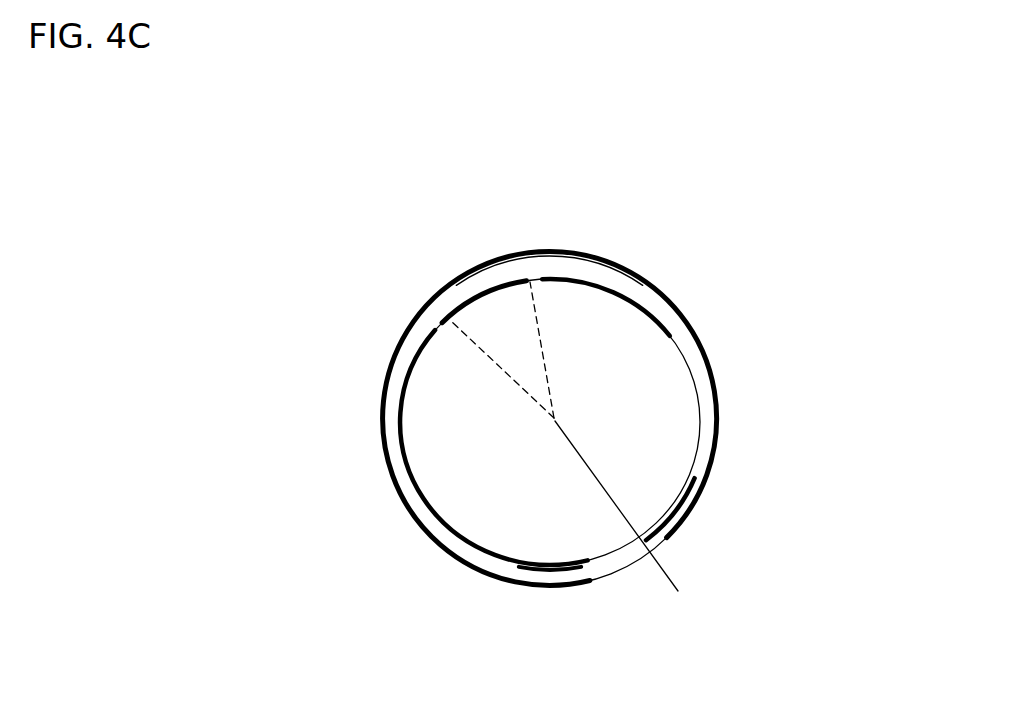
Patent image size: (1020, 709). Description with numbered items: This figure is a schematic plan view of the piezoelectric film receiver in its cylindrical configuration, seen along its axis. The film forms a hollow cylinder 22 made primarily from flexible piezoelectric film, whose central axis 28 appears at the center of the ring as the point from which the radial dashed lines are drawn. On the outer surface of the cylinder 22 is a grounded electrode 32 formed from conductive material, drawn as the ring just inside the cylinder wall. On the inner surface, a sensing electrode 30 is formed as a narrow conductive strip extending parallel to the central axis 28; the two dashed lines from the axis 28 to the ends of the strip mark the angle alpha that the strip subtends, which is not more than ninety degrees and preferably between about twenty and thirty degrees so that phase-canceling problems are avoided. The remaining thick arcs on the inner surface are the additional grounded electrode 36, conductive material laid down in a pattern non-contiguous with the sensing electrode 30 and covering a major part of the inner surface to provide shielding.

The hollow cylinder 22 is at (680, 321).
The central axis 28 is at (678, 591).
The sensing electrode 30 is at (482, 285).
The grounded electrode 32 is at (400, 497).
The additional grounded electrode 36 is at (697, 480).